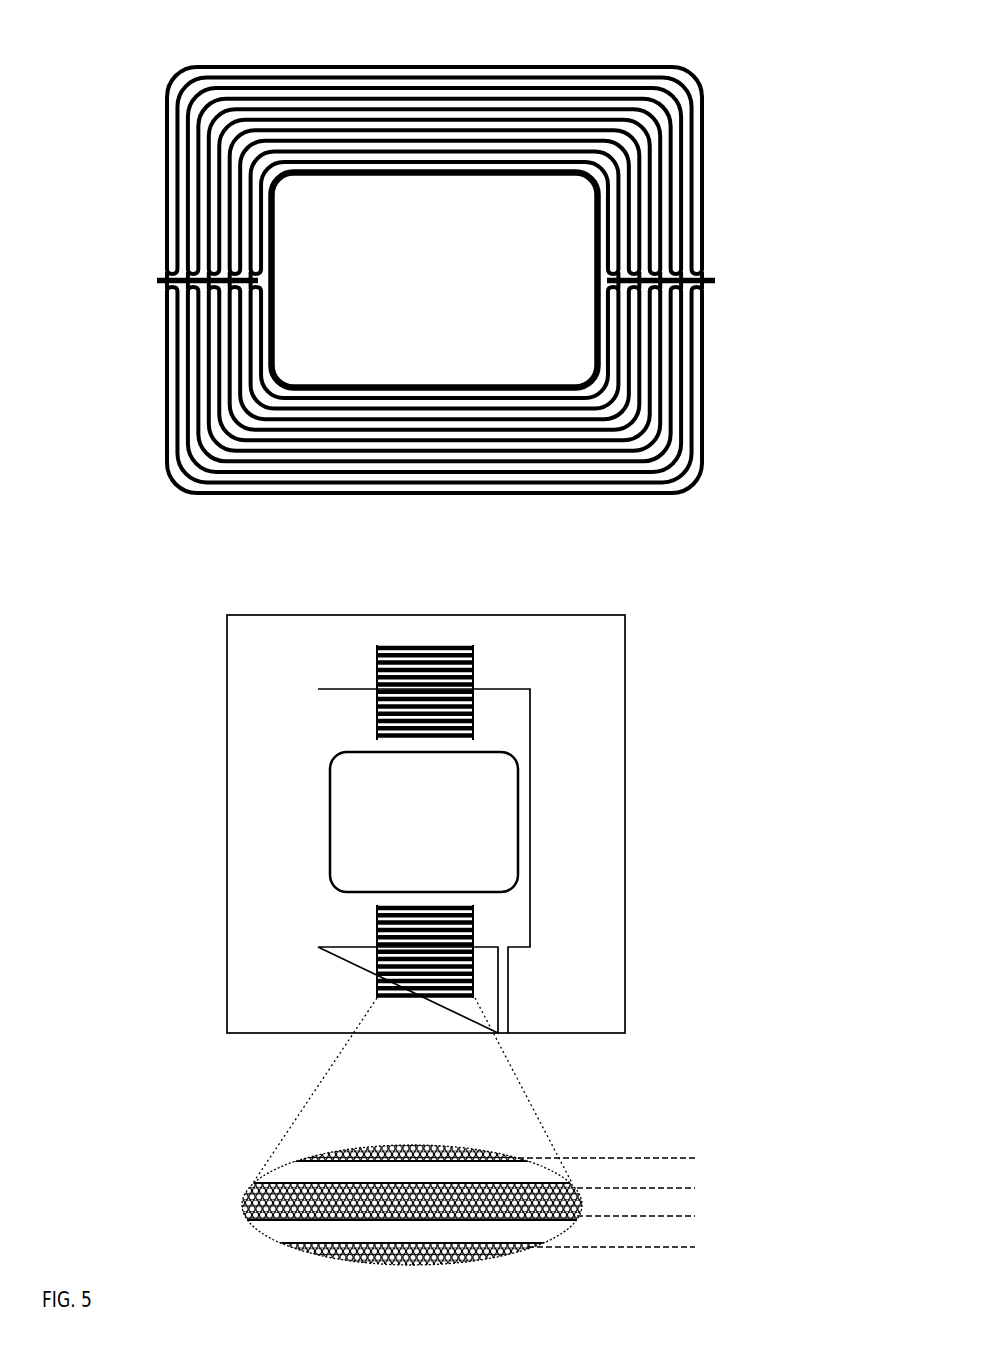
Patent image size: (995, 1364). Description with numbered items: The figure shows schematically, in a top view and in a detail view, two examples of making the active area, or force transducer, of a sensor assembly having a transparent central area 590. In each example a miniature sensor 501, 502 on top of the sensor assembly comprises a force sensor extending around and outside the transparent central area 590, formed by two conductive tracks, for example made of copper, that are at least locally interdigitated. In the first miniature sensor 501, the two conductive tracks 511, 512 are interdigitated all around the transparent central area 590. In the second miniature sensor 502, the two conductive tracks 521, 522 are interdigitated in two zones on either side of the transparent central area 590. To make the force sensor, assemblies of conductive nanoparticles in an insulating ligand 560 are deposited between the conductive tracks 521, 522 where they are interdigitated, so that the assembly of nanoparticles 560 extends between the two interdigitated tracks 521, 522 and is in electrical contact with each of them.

The miniature sensor 501 is at (203, 34).
The miniature sensor 502 is at (226, 581).
The conductive track 511 is at (705, 150).
The conductive track 512 is at (693, 200).
The conductive track 521 is at (318, 915).
The conductive track 522 is at (532, 852).
The assembly of conductive nanoparticles in an insulating ligand 560 is at (243, 1202).
The transparent central area 590 is at (424, 582).